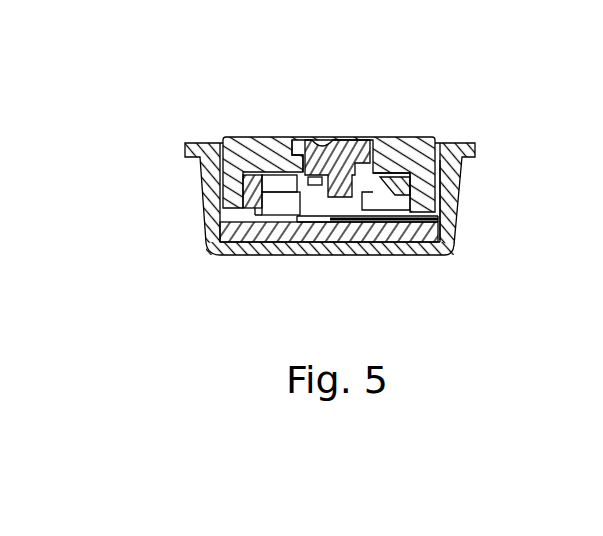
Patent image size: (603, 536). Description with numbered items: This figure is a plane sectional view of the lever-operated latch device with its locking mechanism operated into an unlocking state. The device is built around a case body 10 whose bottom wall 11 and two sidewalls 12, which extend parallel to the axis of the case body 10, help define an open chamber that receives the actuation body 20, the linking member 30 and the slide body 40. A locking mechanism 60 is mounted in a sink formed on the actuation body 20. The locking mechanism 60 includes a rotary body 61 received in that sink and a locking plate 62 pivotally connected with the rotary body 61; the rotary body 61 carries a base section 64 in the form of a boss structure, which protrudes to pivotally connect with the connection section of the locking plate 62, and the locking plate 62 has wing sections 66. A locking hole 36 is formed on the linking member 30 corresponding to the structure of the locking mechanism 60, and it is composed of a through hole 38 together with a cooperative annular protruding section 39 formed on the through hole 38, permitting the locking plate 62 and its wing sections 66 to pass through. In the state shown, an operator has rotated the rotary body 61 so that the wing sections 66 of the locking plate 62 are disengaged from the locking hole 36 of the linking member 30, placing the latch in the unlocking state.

The case body 10 is at (186, 231).
The bottom wall 11 is at (430, 255).
The sidewalls 12 is at (457, 208).
The actuation body 20 is at (228, 125).
The linking member 30 is at (232, 188).
The locking hole 36 is at (382, 160).
The through hole 38 is at (283, 203).
The cooperative annular protruding section 39 is at (277, 185).
The slide body 40 is at (238, 256).
The locking mechanism 60 is at (346, 137).
The rotary body 61 is at (300, 153).
The locking plate 62 is at (310, 203).
The base section 64 is at (332, 203).
The wing sections 66 is at (372, 205).